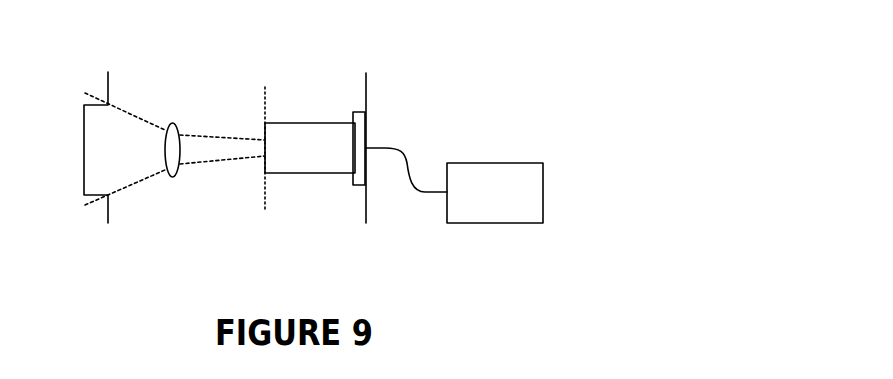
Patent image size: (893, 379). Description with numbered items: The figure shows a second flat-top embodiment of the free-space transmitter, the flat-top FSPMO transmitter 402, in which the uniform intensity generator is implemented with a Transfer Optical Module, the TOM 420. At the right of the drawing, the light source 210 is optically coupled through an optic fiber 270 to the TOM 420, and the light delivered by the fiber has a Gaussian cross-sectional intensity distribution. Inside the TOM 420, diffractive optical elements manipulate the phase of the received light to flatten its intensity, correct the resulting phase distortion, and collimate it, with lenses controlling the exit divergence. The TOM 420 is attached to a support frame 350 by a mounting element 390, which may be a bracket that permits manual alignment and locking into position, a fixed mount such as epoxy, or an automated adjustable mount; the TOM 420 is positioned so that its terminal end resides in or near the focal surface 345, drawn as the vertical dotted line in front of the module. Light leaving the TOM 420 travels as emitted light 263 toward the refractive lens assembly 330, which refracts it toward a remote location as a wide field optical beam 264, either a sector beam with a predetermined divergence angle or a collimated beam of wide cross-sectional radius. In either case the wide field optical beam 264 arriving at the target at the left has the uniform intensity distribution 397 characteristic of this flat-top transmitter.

The uniform intensity distribution 397 is at (110, 84).
The wide field optical beam 264 is at (122, 117).
The emitted light 263 is at (214, 157).
The refractive lens assembly 330 is at (178, 127).
The focal surface 345 is at (265, 206).
The Transfer Optical Module (TOM) 420 is at (318, 123).
The mounting element 390 is at (359, 188).
The support frame 350 is at (367, 213).
The optic fiber 270 is at (407, 158).
The light source 210 is at (544, 178).
The flat-top FSPMO transmitter 402 is at (508, 65).